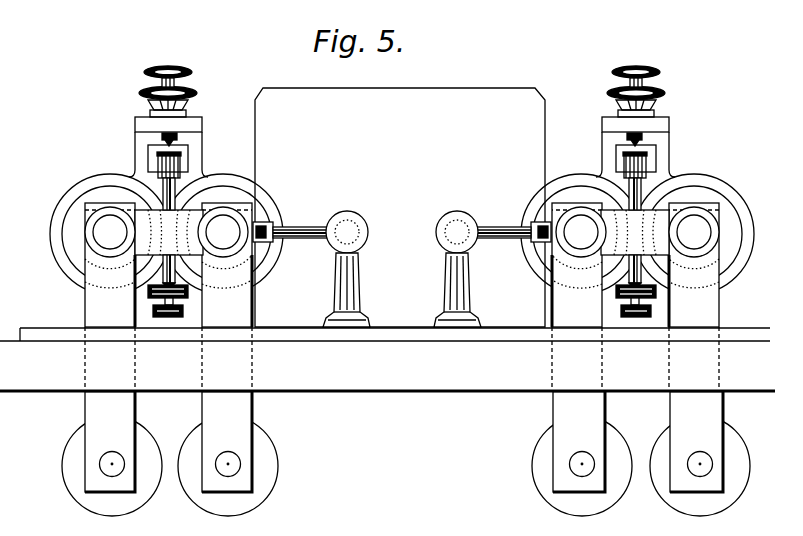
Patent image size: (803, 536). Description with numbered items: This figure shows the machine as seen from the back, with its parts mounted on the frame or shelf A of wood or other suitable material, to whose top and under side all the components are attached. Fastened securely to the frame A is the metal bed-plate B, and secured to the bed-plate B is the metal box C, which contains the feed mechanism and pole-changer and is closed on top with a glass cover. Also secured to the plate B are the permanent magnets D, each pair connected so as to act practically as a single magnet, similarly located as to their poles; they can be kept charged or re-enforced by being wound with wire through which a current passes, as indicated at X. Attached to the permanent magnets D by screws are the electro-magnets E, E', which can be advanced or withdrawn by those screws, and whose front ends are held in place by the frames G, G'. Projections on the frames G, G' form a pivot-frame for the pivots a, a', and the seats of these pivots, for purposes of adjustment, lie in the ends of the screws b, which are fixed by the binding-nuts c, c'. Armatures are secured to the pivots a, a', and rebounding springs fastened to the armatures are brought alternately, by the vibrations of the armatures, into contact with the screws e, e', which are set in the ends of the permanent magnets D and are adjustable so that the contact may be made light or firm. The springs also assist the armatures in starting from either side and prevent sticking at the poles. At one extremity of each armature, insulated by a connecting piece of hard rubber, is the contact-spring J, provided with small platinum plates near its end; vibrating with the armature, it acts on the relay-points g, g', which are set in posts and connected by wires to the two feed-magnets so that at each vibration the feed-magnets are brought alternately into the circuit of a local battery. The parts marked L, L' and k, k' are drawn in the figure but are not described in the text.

The frame or shelf A is at (387, 373).
The bed-plate B is at (385, 323).
The metal box C is at (400, 207).
The permanent magnets D is at (402, 296).
The electro-magnet E is at (158, 227).
The electro-magnet E' is at (634, 224).
The frame G is at (177, 147).
The frame G' is at (649, 148).
The bracket L is at (150, 152).
The bracket L' is at (615, 152).
The pivot a is at (171, 234).
The pivot a' is at (631, 234).
The screw b is at (402, 66).
The binding-nut c is at (156, 98).
The binding-nut c' is at (621, 99).
The screw e is at (166, 232).
The screw e' is at (637, 232).
The contact-spring J is at (290, 224).
The relay-point g is at (347, 225).
The relay-point g' is at (451, 226).
The pillar k is at (337, 290).
The pillar k' is at (461, 290).
The wire winding X is at (62, 463).